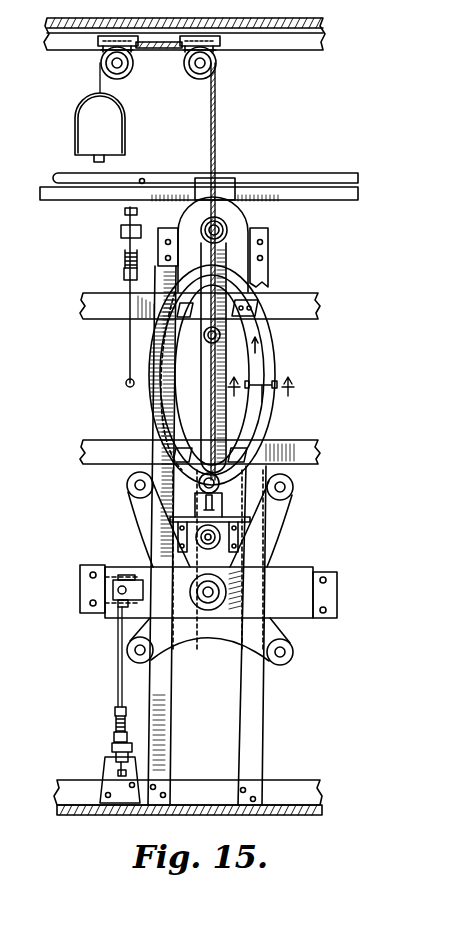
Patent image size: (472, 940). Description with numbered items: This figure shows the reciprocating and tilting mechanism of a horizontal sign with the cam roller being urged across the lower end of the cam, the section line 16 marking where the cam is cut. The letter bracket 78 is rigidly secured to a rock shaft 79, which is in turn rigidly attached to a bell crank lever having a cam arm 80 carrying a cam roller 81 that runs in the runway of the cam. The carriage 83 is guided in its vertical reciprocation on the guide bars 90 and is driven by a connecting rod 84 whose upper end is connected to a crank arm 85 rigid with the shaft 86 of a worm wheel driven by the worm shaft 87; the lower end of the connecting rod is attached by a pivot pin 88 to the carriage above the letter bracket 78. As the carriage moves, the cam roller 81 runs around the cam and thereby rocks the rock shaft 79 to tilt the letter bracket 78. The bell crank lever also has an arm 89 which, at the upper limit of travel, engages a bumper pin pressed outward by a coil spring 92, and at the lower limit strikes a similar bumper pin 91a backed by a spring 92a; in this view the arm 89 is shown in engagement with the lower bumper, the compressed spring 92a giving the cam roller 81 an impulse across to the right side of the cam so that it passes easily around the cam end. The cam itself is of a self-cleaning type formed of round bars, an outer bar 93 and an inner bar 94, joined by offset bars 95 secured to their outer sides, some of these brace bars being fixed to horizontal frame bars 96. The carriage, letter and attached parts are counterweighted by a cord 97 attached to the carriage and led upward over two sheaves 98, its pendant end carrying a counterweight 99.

The section line 16- 16 is at (270, 377).
The letter bracket 78 is at (300, 577).
The rock shaft 79 is at (208, 596).
The cam arm 80 is at (218, 562).
The cam roller 81 is at (192, 493).
The carriage 83 is at (263, 522).
The connecting rod 84 is at (203, 405).
The crank arm 85 is at (227, 282).
The shaft 86 is at (228, 232).
The worm shaft 87 is at (290, 190).
The pivot pin 88 is at (197, 539).
The arm 89 is at (140, 598).
The guide bars 90 is at (166, 716).
The bumper pin 91a is at (118, 683).
The coil spring 92 is at (125, 254).
The spring 92a is at (114, 727).
The outer bar 93 is at (268, 345).
The inner bar 94 is at (249, 370).
The offset bars 95 is at (260, 311).
The horizontal frame bars 96 is at (305, 298).
The cord 97 is at (216, 136).
The sheaves 98 is at (123, 73).
The counterweight 99 is at (76, 124).